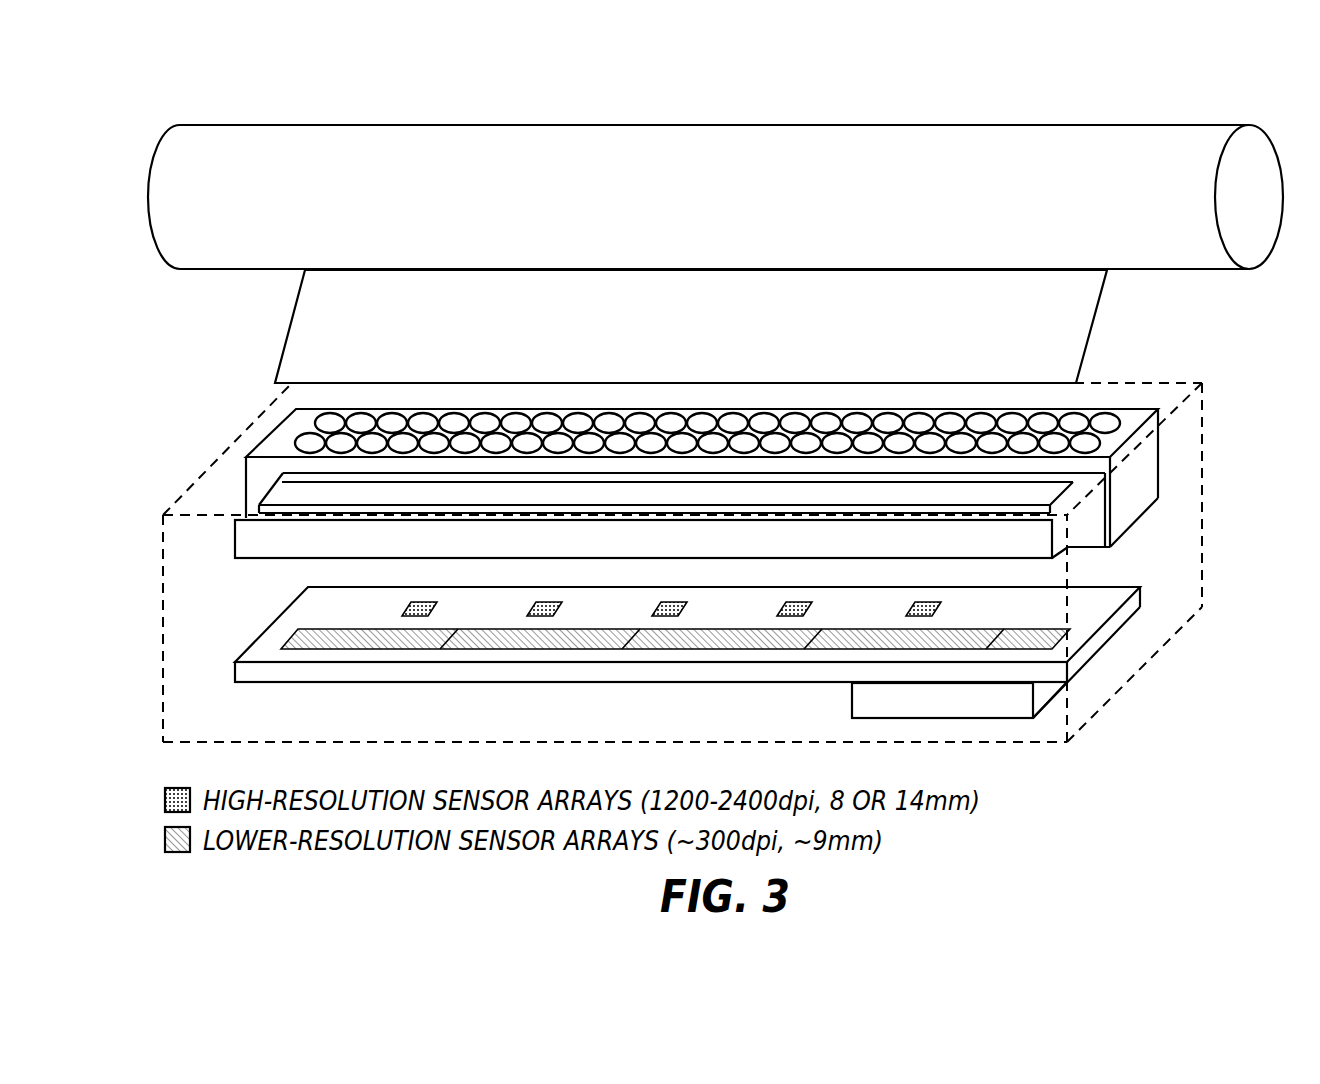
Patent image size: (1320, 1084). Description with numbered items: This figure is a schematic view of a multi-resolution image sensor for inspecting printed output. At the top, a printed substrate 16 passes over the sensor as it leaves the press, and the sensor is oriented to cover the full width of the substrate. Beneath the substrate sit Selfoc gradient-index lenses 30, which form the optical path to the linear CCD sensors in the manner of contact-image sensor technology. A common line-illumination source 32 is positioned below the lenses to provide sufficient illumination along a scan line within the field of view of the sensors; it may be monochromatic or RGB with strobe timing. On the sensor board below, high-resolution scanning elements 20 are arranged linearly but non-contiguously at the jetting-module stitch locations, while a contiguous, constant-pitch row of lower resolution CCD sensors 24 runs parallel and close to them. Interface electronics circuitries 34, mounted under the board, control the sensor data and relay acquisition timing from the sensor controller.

The printed substrate 16 is at (290, 331).
The high-resolution scanning elements 20 is at (402, 610).
The lower resolution CCD sensors 24 is at (288, 643).
The gradient-index lenses 30 is at (275, 426).
The line-illumination source 32 is at (235, 521).
The interface electronics circuitries 34 is at (928, 720).